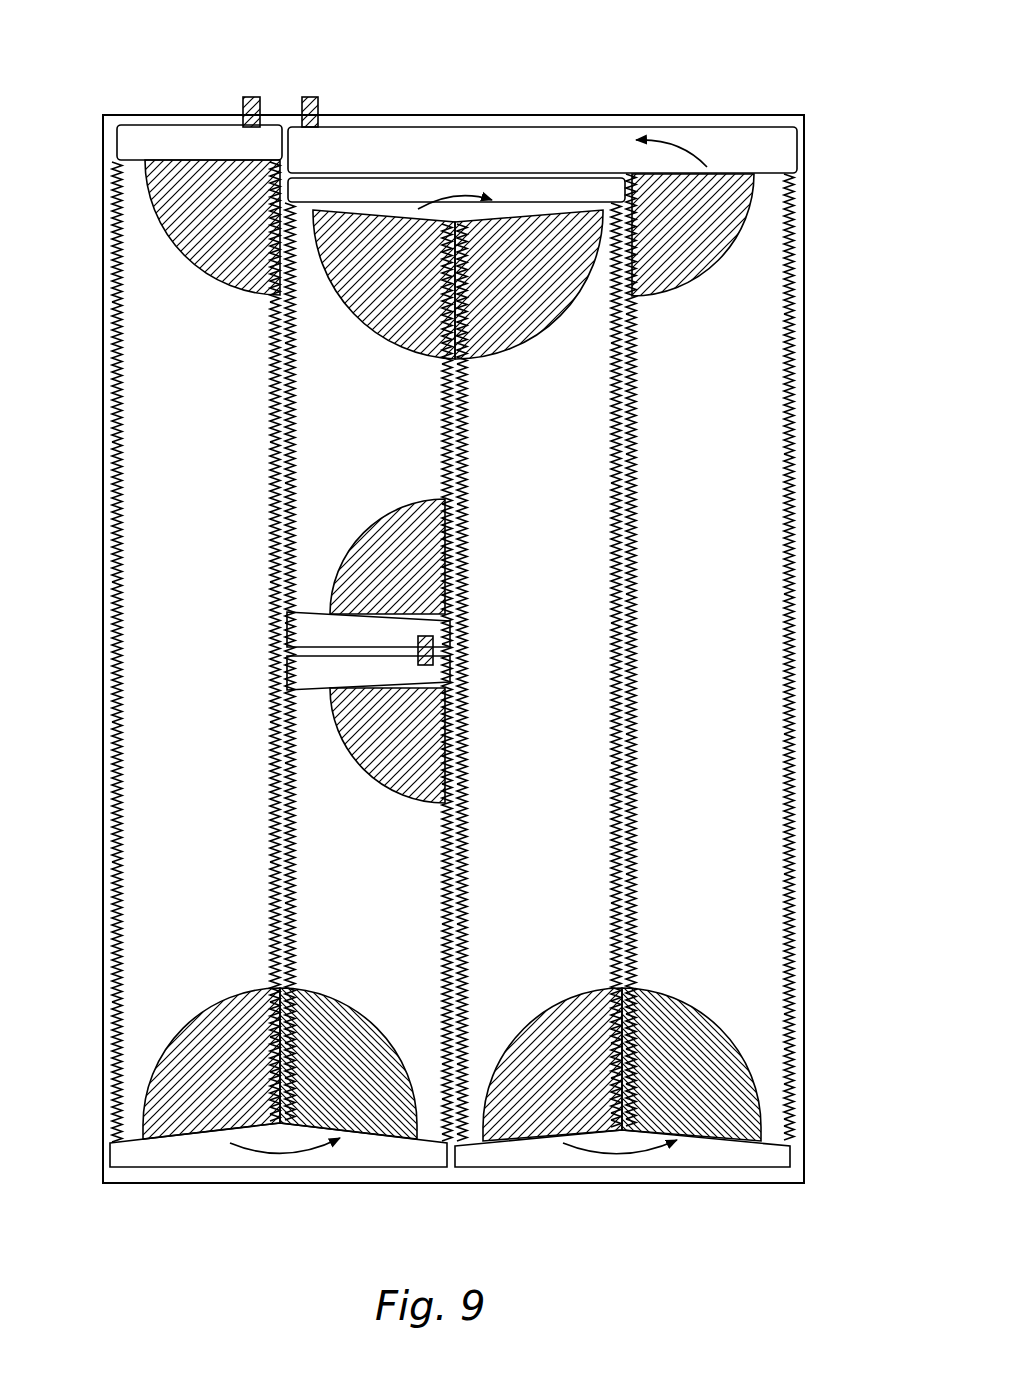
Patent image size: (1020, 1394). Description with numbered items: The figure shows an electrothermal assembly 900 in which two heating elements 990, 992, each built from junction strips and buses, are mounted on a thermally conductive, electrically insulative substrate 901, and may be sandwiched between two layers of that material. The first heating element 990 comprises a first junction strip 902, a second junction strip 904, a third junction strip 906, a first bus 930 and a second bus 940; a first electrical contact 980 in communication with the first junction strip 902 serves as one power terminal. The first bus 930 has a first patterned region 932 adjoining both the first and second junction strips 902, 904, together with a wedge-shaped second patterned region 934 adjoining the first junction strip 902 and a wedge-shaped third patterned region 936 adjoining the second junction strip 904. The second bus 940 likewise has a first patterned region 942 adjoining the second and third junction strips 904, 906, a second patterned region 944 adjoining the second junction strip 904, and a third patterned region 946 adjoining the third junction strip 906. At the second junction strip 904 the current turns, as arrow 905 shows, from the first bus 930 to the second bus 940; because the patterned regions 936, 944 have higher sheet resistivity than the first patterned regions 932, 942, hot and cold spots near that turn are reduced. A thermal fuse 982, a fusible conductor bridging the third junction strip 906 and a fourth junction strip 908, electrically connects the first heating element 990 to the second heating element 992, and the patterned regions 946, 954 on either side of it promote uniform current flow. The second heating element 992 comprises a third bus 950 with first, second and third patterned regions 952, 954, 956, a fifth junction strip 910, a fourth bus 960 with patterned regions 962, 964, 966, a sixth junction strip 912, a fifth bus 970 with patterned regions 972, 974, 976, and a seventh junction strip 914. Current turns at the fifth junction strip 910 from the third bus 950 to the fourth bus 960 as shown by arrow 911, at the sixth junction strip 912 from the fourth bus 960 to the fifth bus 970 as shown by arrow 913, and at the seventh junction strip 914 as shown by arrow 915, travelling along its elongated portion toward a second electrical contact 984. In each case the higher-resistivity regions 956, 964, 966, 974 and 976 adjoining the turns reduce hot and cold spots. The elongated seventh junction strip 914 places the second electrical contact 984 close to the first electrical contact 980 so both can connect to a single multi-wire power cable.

The electrothermal assembly 900 is at (79, 22).
The substrate 901 is at (748, 114).
The first junction strip 902 is at (174, 140).
The second junction strip 904 is at (187, 1152).
The arrow 905 is at (280, 1152).
The third junction strip 906 is at (300, 675).
The fourth junction strip 908 is at (300, 627).
The fifth junction strip 910 is at (380, 195).
The arrow 911 is at (440, 190).
The sixth junction strip 912 is at (610, 1158).
The arrow 913 is at (640, 1155).
The seventh junction strip 914 is at (532, 147).
The arrow 915 is at (683, 145).
The first bus 930 is at (113, 792).
The first patterned region 932 is at (150, 378).
The second patterned region 934 is at (167, 198).
The third patterned region 936 is at (163, 1073).
The second bus 940 is at (283, 740).
The first patterned region 942 is at (310, 890).
The second patterned region 944 is at (370, 1110).
The third patterned region 946 is at (420, 743).
The third bus 950 is at (480, 432).
The first patterned region 952 is at (327, 462).
The second patterned region 954 is at (363, 557).
The third patterned region 956 is at (343, 222).
The fourth bus 960 is at (640, 750).
The first patterned region 962 is at (585, 490).
The second patterned region 964 is at (540, 328).
The third patterned region 966 is at (542, 1110).
The fifth bus 970 is at (793, 786).
The first patterned region 972 is at (750, 398).
The second patterned region 974 is at (733, 1070).
The third patterned region 976 is at (727, 222).
The first electrical contact 980 is at (248, 96).
The thermal fuse 982 is at (433, 642).
The second electrical contact 984 is at (309, 96).
The heating element 990 is at (115, 655).
The heating element 992 is at (795, 630).